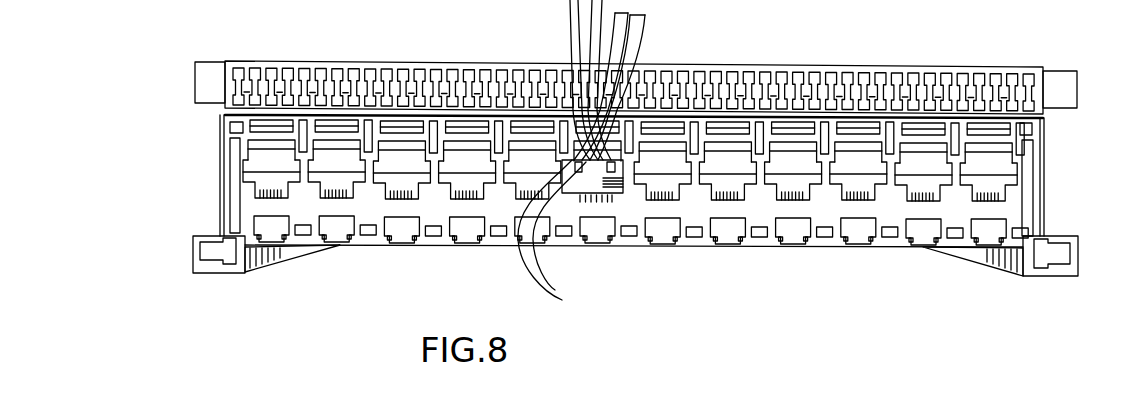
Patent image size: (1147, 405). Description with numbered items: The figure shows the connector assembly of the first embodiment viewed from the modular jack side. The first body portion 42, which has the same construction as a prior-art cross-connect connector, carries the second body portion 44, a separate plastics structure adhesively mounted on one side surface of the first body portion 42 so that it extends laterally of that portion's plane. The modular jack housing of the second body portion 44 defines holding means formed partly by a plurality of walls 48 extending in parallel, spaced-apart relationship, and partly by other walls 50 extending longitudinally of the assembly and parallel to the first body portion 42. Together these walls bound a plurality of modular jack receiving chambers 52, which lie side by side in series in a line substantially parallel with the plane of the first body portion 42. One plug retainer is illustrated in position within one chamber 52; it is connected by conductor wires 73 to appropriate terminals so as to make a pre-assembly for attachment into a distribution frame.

The first body portion 42 is at (472, 56).
The second body portion 44 is at (200, 165).
The walls 48 is at (436, 178).
The walls 50 is at (999, 150).
The modular jack receiving chambers 52 is at (721, 180).
The conductor wires 73 is at (581, 152).